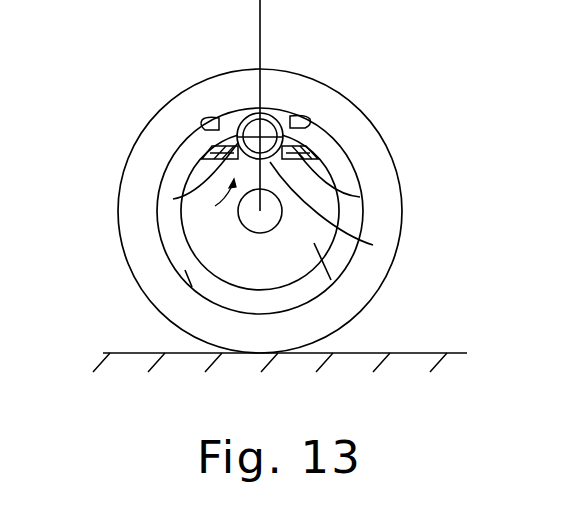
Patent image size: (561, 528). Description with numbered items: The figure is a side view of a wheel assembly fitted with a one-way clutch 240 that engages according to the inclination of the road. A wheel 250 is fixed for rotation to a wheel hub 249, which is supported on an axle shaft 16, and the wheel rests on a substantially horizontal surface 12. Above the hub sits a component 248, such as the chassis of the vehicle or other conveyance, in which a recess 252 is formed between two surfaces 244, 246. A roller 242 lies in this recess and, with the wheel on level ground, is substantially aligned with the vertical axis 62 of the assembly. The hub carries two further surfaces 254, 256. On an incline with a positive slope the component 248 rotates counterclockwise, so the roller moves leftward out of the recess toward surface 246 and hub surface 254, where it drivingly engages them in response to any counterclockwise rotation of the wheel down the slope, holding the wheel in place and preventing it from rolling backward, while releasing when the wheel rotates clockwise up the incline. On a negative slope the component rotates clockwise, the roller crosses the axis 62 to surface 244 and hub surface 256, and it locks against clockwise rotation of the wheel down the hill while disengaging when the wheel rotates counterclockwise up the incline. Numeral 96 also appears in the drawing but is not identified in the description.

The horizontal surface 12 is at (373, 357).
The axle shaft 16 is at (128, 267).
The vertical axis 62 is at (261, 11).
The support arm 96 is at (173, 199).
The one-way clutch 240 is at (212, 198).
The roller 242 is at (267, 113).
The surface 244 is at (360, 197).
The surface 246 is at (181, 215).
The component 248 is at (353, 273).
The wheel hub 249 is at (162, 313).
The wheel 250 is at (345, 298).
The recess 252 is at (373, 245).
The surface 254 is at (197, 127).
The surface 256 is at (310, 122).